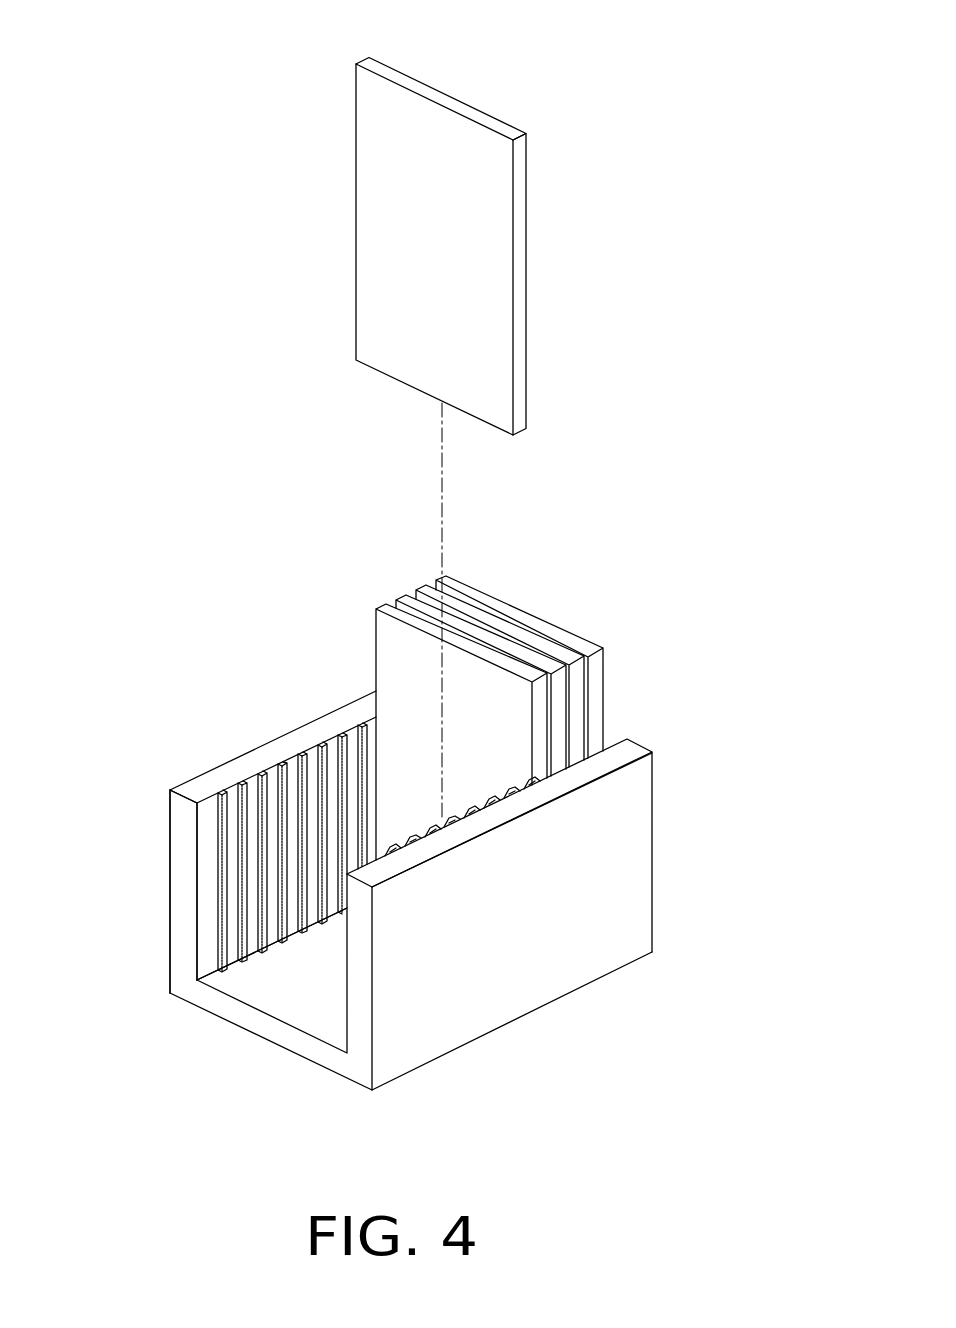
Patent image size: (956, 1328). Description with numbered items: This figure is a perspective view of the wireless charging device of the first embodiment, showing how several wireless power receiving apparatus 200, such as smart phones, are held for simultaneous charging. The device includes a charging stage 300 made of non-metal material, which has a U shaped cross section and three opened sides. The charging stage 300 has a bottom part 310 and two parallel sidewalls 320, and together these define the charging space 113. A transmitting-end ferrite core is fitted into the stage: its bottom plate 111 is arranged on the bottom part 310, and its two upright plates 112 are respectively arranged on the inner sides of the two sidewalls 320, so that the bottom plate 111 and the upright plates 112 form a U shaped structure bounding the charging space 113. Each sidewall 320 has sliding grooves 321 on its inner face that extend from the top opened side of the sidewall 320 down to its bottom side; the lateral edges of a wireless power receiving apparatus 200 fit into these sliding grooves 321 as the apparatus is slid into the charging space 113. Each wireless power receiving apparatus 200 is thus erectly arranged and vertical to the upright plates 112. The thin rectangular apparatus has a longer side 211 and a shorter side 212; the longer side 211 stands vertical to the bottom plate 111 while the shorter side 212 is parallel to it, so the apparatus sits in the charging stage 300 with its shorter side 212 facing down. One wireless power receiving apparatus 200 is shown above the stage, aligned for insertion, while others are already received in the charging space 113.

The wireless power receiving apparatus 200 is at (432, 434).
The longer side 211 is at (522, 352).
The shorter side 212 is at (473, 113).
The charging stage 300 is at (300, 580).
The bottom part 310 is at (355, 946).
The sidewall 320 is at (371, 860).
The sliding groove 321 is at (363, 715).
The bottom plate 111 is at (283, 1015).
The upright plate 112 is at (193, 866).
The charging space 113 is at (393, 813).